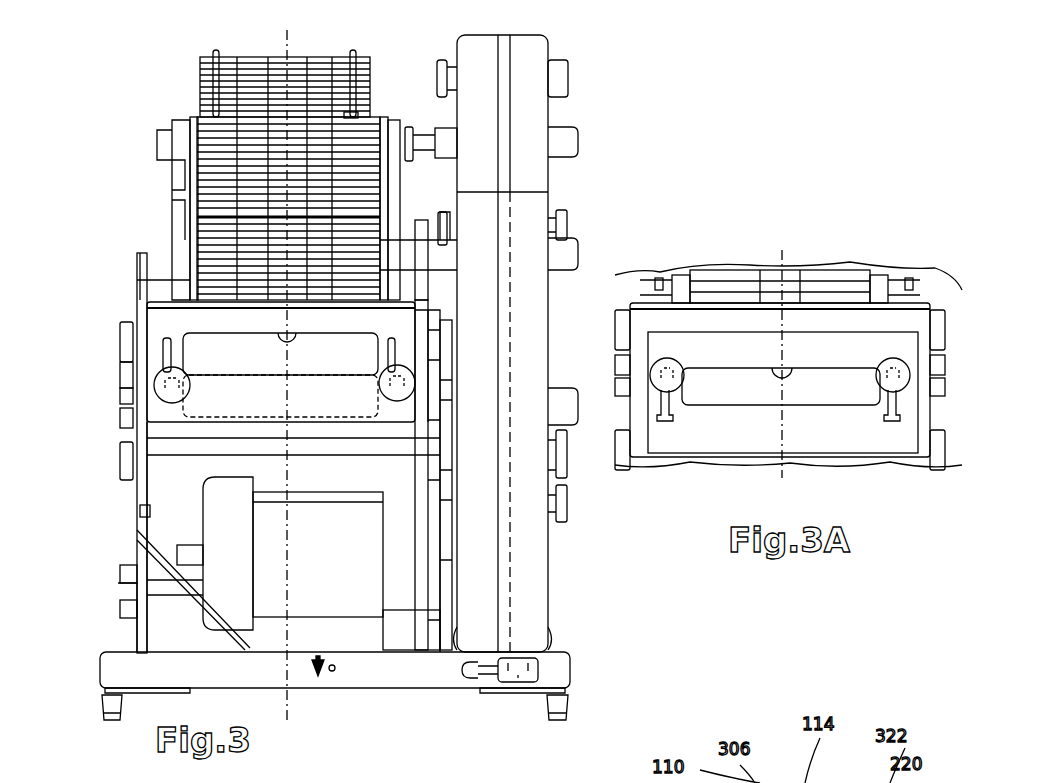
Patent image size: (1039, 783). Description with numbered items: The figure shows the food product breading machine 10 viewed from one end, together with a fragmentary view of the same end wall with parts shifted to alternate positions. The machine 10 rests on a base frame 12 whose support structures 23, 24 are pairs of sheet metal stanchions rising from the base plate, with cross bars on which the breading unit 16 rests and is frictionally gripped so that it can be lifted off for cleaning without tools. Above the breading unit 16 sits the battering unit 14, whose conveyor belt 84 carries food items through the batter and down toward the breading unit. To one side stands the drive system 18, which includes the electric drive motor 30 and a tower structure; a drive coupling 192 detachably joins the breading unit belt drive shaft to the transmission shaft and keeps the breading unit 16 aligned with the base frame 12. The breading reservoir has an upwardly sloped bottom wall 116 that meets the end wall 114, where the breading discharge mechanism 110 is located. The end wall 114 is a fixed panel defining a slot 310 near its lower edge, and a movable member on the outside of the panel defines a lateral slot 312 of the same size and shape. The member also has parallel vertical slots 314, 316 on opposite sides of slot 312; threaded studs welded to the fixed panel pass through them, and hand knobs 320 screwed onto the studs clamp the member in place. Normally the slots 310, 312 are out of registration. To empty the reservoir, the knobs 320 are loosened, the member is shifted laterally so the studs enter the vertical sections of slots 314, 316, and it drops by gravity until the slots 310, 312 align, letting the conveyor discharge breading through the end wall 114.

In FIG. 3, the food product breading machine 10 is at (585, 215).
In FIG. 3, the base frame 12 is at (390, 688).
In FIG. 3, the battering unit 14 is at (188, 115).
In FIG. 3, the breading unit 16 is at (118, 348).
In FIG. 3, the drive system 18 is at (548, 355).
In FIG. 3, the support structure 23 is at (118, 580).
In FIG. 3, the support structure 24 is at (140, 530).
In FIG. 3, the drive motor 30 is at (293, 563).
In FIG. 3, the conveyor belt 84 is at (352, 135).
In FIG. 3, the breading discharge mechanism 110 is at (430, 395).
In FIG. 3, the end wall 114 is at (150, 415).
In FIG. 3A, the end wall 114 is at (658, 448).
In FIG. 3, the sloped bottom wall 116 is at (338, 430).
In FIG. 3, the drive coupling 192 is at (462, 335).
In FIG. 3, the slot 310 is at (170, 312).
In FIG. 3A, the slot 310 is at (748, 335).
In FIG. 3, the lateral slot 312 is at (320, 335).
In FIG. 3A, the lateral slot 312 is at (800, 360).
In FIG. 3, the slot 314 is at (170, 352).
In FIG. 3A, the slot 314 is at (660, 420).
In FIG. 3, the slot 316 is at (388, 352).
In FIG. 3A, the slot 316 is at (885, 420).
In FIG. 3, the hand knob 320 is at (185, 393).
In FIG. 3A, the hand knob 320 is at (685, 382).